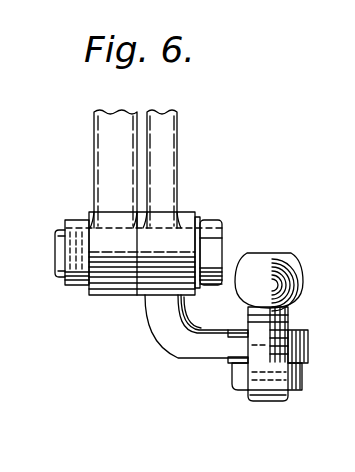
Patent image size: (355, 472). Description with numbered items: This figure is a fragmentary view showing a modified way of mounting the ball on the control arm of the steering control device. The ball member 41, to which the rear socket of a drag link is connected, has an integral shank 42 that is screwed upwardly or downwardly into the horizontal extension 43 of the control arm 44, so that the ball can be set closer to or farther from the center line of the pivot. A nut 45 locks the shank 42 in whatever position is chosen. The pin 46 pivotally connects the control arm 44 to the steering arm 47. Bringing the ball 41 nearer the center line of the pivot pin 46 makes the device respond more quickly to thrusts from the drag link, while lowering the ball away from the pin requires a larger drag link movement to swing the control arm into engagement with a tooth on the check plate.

The ball member 41 is at (296, 272).
The shank 42 is at (289, 317).
The horizontal extension 43 is at (181, 350).
The control arm 44 is at (170, 144).
The nut 45 is at (303, 378).
The pin 46 is at (56, 246).
The steering arm 47 is at (112, 146).